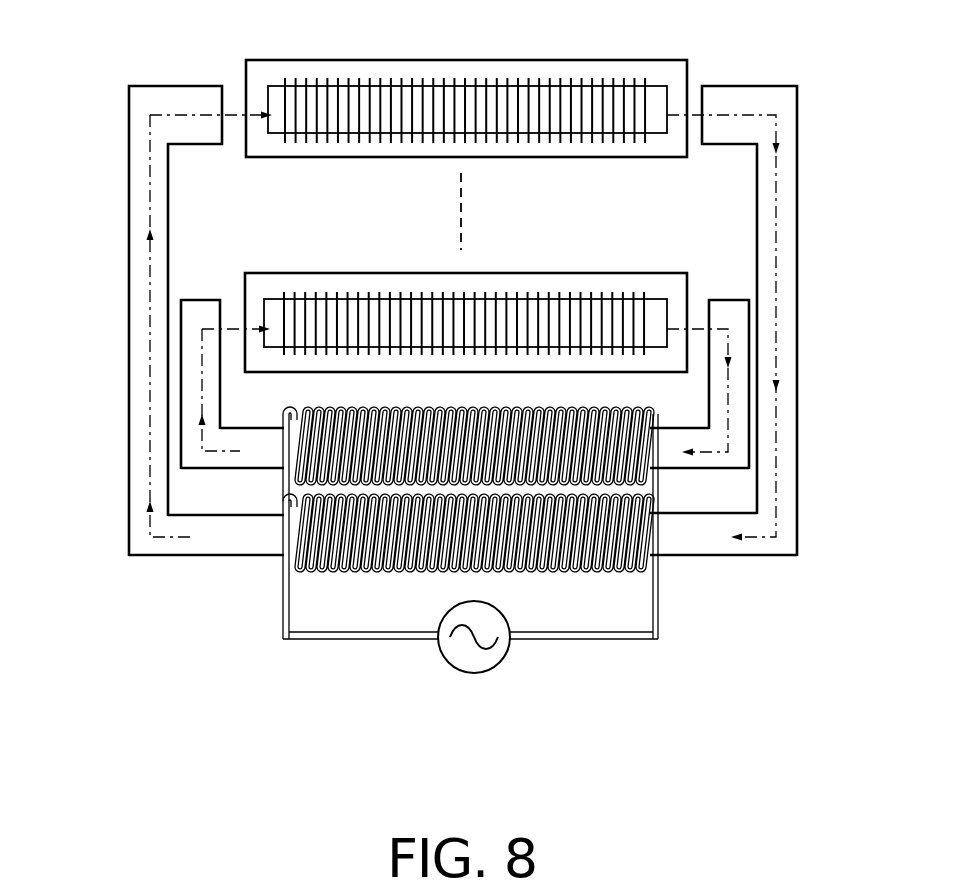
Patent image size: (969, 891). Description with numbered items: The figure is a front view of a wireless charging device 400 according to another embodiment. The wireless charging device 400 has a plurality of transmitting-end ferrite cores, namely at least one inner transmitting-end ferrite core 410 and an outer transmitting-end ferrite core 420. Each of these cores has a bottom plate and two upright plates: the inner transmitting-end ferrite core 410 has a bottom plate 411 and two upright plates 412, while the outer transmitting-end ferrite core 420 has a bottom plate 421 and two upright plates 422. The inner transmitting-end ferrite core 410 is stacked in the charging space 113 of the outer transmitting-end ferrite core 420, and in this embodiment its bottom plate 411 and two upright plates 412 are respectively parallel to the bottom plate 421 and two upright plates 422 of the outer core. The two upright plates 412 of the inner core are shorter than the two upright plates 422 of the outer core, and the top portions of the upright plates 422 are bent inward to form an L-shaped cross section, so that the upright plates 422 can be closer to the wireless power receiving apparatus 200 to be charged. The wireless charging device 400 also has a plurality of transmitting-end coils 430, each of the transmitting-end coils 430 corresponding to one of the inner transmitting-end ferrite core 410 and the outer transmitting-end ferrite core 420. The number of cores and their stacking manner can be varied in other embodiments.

The charging space 113 is at (728, 492).
The wireless power receiving apparatus 200 is at (507, 151).
The wireless charging device 400 is at (451, 409).
The inner transmitting-end ferrite core 410 is at (413, 410).
The bottom plate 411 is at (683, 462).
The upright plates 412 is at (206, 300).
The outer transmitting-end ferrite core 420 is at (451, 387).
The bottom plate 421 is at (687, 541).
The upright plates 422 is at (141, 168).
The transmitting-end coils 430 is at (367, 569).